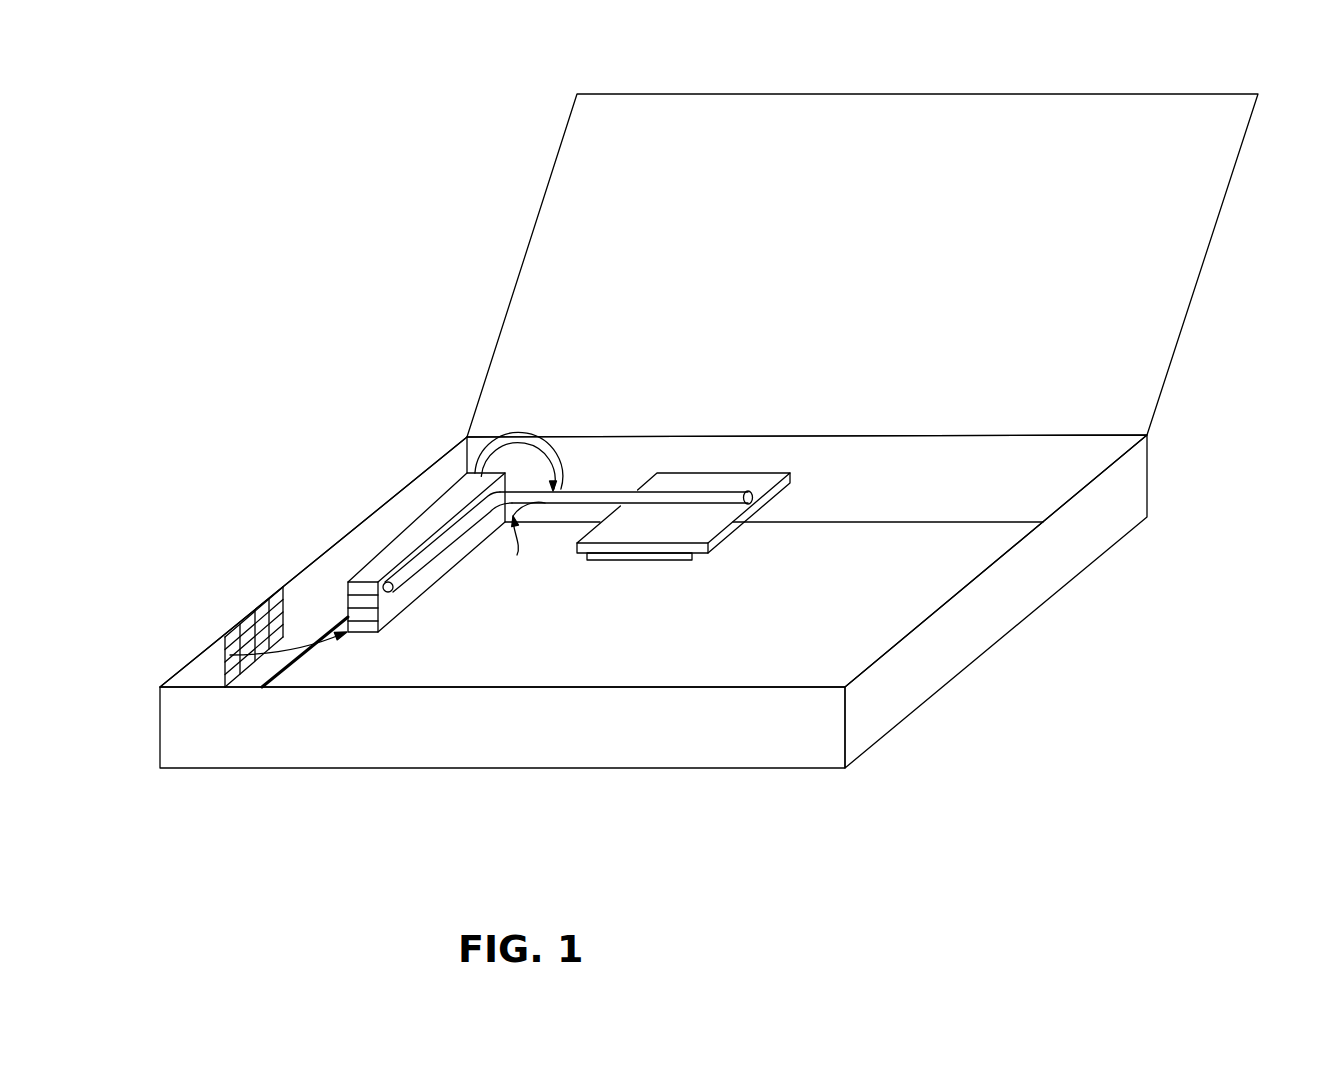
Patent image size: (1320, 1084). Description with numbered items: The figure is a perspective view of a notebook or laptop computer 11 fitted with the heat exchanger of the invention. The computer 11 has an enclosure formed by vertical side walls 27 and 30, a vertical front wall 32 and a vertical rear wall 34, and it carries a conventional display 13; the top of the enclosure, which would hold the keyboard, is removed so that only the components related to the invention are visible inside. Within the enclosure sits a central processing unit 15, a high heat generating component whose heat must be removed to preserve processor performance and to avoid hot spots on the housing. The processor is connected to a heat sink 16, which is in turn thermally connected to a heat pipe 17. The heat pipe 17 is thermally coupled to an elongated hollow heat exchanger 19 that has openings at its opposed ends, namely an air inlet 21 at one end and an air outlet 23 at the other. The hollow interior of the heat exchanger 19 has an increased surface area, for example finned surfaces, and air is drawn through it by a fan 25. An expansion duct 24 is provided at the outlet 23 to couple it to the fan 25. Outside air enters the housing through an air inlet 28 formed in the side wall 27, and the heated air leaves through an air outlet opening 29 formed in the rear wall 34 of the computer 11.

The notebook computer 11 is at (1210, 382).
The display 13 is at (1185, 263).
The central processing unit 15 is at (653, 560).
The heat sink 16 is at (790, 472).
The heat pipe 17 is at (560, 502).
The heat exchanger 19 is at (417, 585).
The air inlet 21 is at (367, 627).
The air outlet 23 is at (542, 491).
The expansion duct 24 is at (519, 537).
The fan 25 is at (532, 444).
The side wall 27 is at (208, 674).
The air inlet 28 is at (265, 616).
The air outlet opening 29 is at (553, 464).
The side wall 30 is at (647, 601).
The front wall 32 is at (773, 741).
The rear wall 34 is at (931, 497).